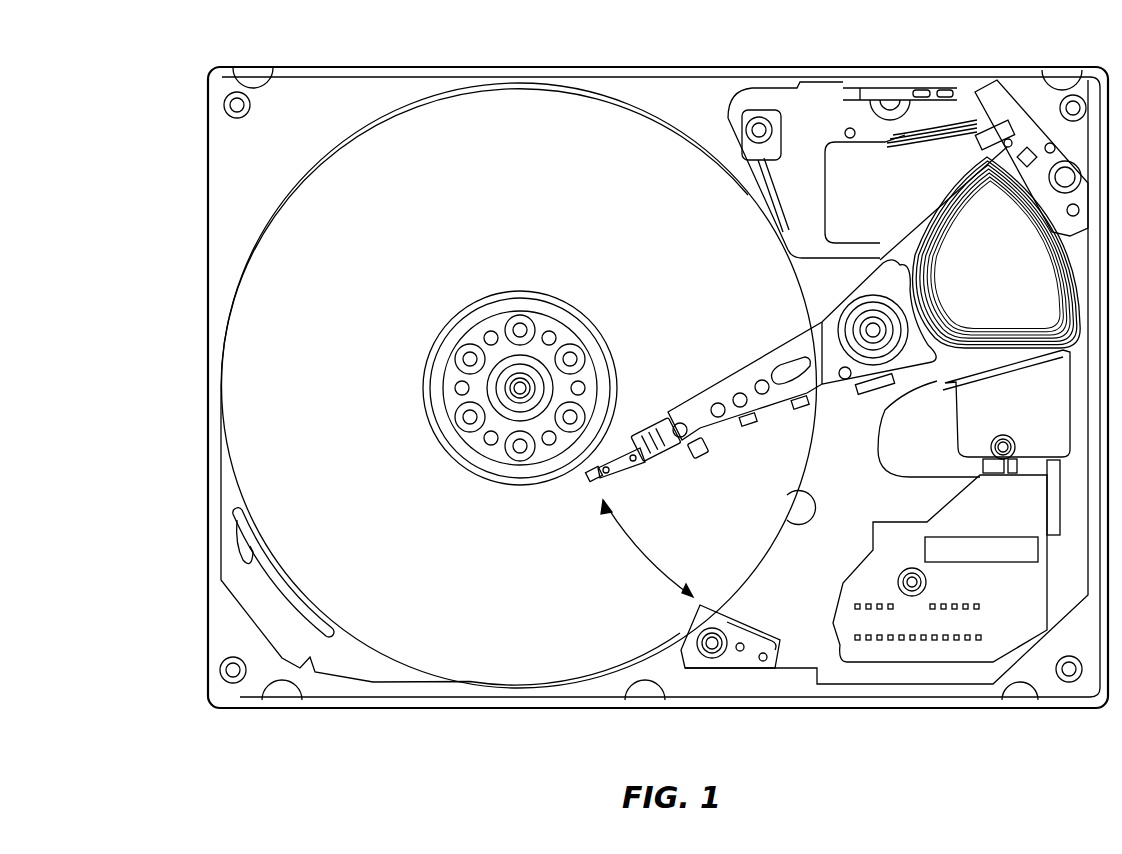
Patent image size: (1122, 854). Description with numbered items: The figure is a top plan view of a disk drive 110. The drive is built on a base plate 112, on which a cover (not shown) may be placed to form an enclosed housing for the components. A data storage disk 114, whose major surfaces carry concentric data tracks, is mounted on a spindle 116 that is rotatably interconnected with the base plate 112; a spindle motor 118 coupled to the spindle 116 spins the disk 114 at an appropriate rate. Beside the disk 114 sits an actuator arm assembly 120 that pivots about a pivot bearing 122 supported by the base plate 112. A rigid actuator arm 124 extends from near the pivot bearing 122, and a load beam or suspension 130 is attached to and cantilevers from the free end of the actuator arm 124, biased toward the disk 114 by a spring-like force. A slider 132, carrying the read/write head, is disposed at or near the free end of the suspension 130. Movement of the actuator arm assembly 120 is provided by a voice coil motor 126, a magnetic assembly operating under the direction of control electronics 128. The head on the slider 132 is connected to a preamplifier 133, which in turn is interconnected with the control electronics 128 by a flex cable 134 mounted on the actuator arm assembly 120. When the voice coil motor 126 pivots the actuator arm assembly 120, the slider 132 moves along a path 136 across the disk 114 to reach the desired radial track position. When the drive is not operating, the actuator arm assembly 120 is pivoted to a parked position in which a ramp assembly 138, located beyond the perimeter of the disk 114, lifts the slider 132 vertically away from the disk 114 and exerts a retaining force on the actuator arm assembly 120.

The disk drive 110 is at (146, 158).
The base plate 112 is at (407, 67).
The data storage disk 114 is at (533, 115).
The spindle 116 is at (545, 292).
The spindle motor 118 is at (500, 362).
The actuator arm assembly 120 is at (755, 353).
The pivot bearing 122 is at (867, 352).
The actuator arm 124 is at (733, 425).
The voice coil motor 126 is at (997, 252).
The control electronics 128 is at (918, 650).
The suspension 130 is at (630, 434).
The slider 132 is at (592, 480).
The preamplifier 133 is at (867, 410).
The flex cable 134 is at (883, 468).
The path 136 is at (643, 560).
The ramp assembly 138 is at (738, 668).